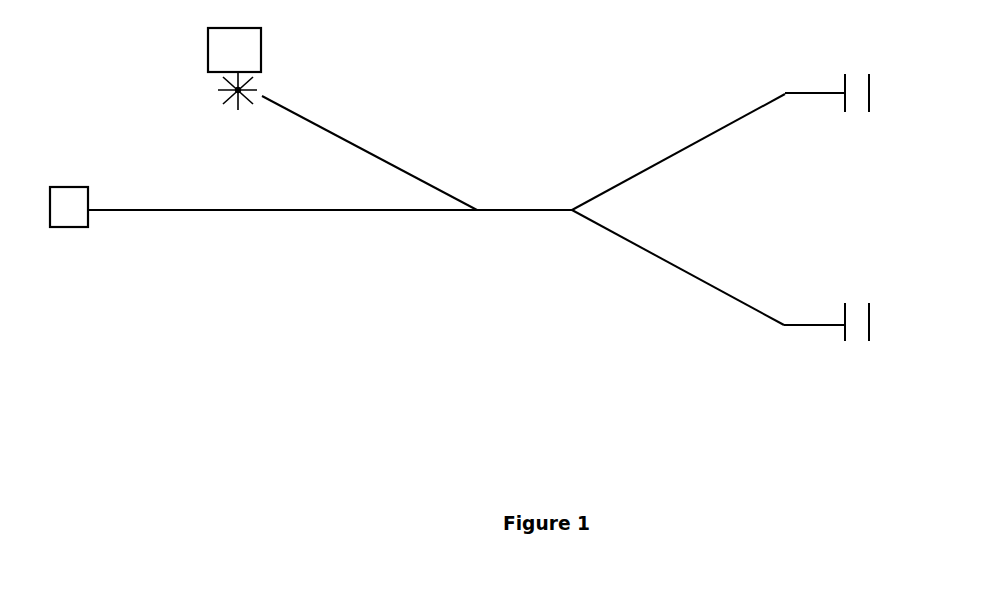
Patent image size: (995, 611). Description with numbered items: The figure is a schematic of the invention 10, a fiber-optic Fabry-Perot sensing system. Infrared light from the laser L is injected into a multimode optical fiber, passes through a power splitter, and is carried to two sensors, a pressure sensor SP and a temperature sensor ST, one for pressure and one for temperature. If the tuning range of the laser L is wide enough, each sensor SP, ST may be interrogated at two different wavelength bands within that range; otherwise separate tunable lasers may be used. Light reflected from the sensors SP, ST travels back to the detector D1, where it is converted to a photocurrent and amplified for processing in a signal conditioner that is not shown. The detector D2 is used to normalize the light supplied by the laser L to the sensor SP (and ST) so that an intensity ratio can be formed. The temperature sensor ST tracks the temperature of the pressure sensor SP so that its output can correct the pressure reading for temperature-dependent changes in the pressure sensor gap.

The invention 10 is at (506, 134).
The detector D1 is at (69, 207).
The detector D2 is at (234, 50).
The laser L is at (237, 114).
The pressure sensor SP is at (864, 118).
The temperature sensor ST is at (865, 345).